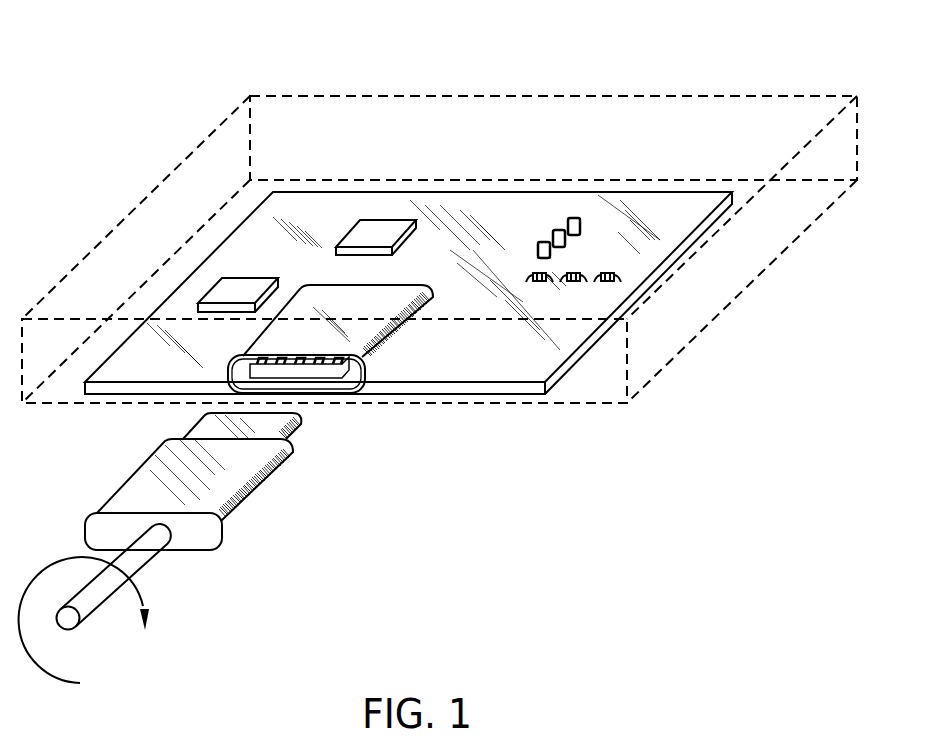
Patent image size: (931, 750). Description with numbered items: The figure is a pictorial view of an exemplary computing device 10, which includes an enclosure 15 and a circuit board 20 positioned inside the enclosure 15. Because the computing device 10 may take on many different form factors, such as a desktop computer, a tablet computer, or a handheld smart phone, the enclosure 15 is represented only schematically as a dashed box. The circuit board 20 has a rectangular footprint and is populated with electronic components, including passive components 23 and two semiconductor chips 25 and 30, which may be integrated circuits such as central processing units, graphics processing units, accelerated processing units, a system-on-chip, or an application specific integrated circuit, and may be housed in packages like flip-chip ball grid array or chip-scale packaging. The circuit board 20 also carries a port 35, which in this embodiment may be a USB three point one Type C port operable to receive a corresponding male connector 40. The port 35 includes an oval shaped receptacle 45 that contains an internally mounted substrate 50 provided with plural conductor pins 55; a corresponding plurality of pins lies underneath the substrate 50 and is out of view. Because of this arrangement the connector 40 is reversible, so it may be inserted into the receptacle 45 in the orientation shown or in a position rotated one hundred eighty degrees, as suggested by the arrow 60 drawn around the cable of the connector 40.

The computing device 10 is at (150, 62).
The enclosure 15 is at (460, 96).
The circuit board 20 is at (514, 240).
The passive components 23 is at (574, 300).
The semiconductor chip 25 is at (228, 296).
The semiconductor chip 30 is at (367, 234).
The port 35 is at (430, 349).
The connector 40 is at (238, 512).
The receptacle 45 is at (374, 360).
The substrate 50 is at (323, 373).
The conductor pins 55 is at (256, 366).
The arrow 60 is at (140, 594).